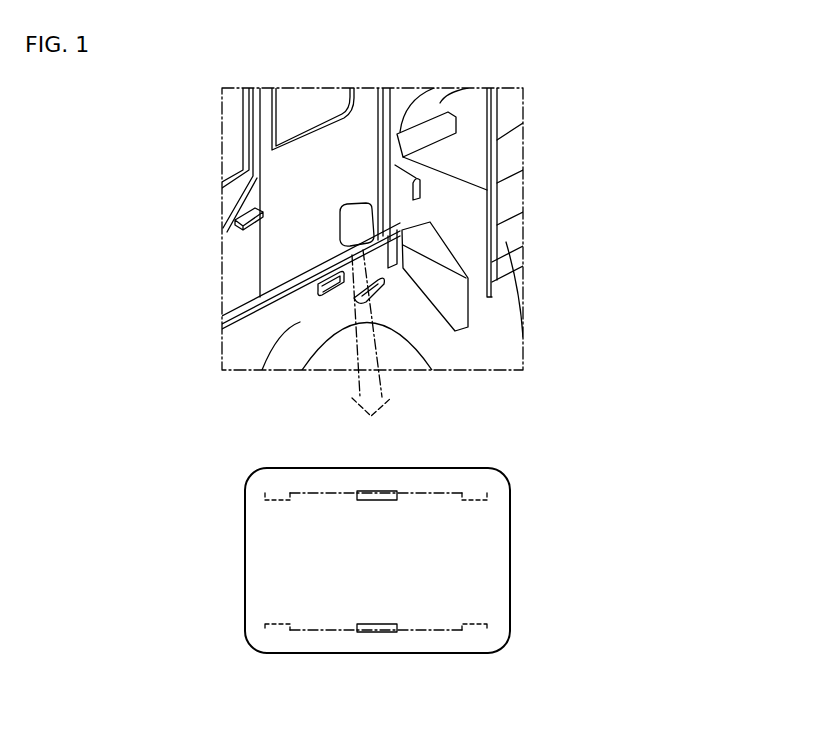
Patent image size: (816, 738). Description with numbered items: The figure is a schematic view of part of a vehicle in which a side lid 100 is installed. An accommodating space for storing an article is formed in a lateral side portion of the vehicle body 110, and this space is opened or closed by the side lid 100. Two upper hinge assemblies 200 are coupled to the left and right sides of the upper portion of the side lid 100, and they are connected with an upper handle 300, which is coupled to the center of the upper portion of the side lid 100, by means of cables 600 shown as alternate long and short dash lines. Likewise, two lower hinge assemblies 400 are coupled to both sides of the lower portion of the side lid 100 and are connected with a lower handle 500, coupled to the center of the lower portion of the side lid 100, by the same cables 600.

The side lid 100 is at (350, 214).
The vehicle body 110 is at (283, 252).
The upper hinge assemblies 200 is at (275, 492).
The upper handle 300 is at (390, 491).
The lower hinge assemblies 400 is at (275, 630).
The lower handle 500 is at (378, 632).
The cables 600 is at (316, 492).